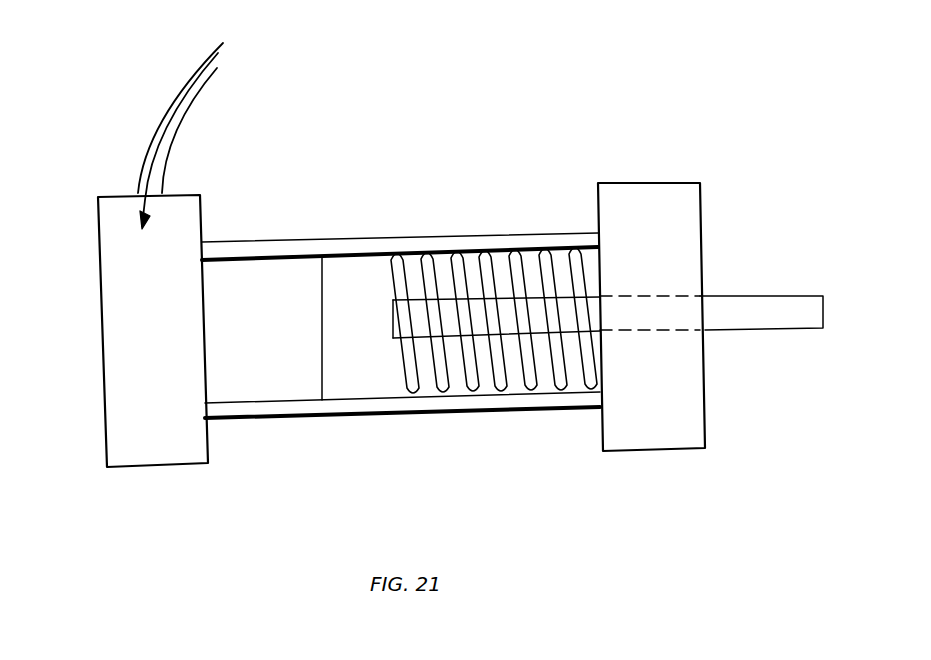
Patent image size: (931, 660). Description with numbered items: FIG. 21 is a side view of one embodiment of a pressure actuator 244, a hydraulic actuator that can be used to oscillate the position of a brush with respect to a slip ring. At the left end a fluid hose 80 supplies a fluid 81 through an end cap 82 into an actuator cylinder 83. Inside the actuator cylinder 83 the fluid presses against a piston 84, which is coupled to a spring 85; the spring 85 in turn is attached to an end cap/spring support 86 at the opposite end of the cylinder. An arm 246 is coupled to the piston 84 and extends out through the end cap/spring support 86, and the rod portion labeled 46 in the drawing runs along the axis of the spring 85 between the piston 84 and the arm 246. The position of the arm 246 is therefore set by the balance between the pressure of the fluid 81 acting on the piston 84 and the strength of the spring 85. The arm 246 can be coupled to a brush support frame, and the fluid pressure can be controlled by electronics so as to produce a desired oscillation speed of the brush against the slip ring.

The pressure actuator 244 is at (517, 112).
The fluid hose 80 is at (165, 118).
The fluid 81 is at (217, 55).
The end cap 82 is at (112, 302).
The actuator cylinder 83 is at (247, 413).
The piston 84 is at (347, 273).
The spring 85 is at (463, 265).
The end cap/spring support 86 is at (648, 183).
The piston rod 46 is at (503, 337).
The arm 246 is at (798, 293).